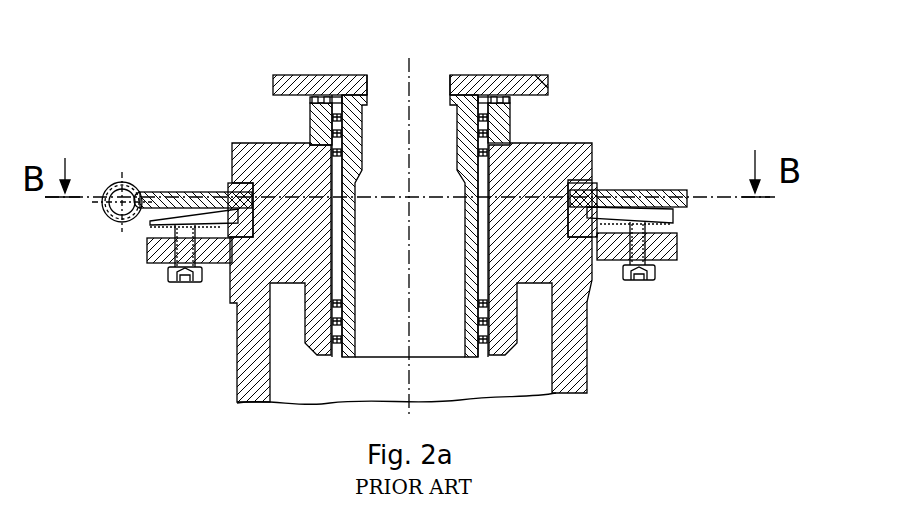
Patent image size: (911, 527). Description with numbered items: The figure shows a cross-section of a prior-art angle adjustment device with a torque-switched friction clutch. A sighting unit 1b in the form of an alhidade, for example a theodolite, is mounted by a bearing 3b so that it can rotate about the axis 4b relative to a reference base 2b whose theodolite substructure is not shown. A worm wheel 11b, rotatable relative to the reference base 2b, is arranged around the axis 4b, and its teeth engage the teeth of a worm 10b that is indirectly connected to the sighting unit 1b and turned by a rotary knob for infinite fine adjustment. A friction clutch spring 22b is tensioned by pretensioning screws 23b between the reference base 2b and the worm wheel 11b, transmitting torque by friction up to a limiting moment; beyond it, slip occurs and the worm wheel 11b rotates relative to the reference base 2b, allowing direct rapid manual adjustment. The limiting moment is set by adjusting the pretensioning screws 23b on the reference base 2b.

The sighting unit 1b is at (545, 74).
The reference base 2b is at (570, 372).
The bearing 3b is at (340, 352).
The axis 4b is at (412, 62).
The worm 10b is at (128, 183).
The worm wheel 11b is at (205, 193).
The friction clutch spring 22b is at (645, 200).
The pretensioning screws 23b is at (650, 281).